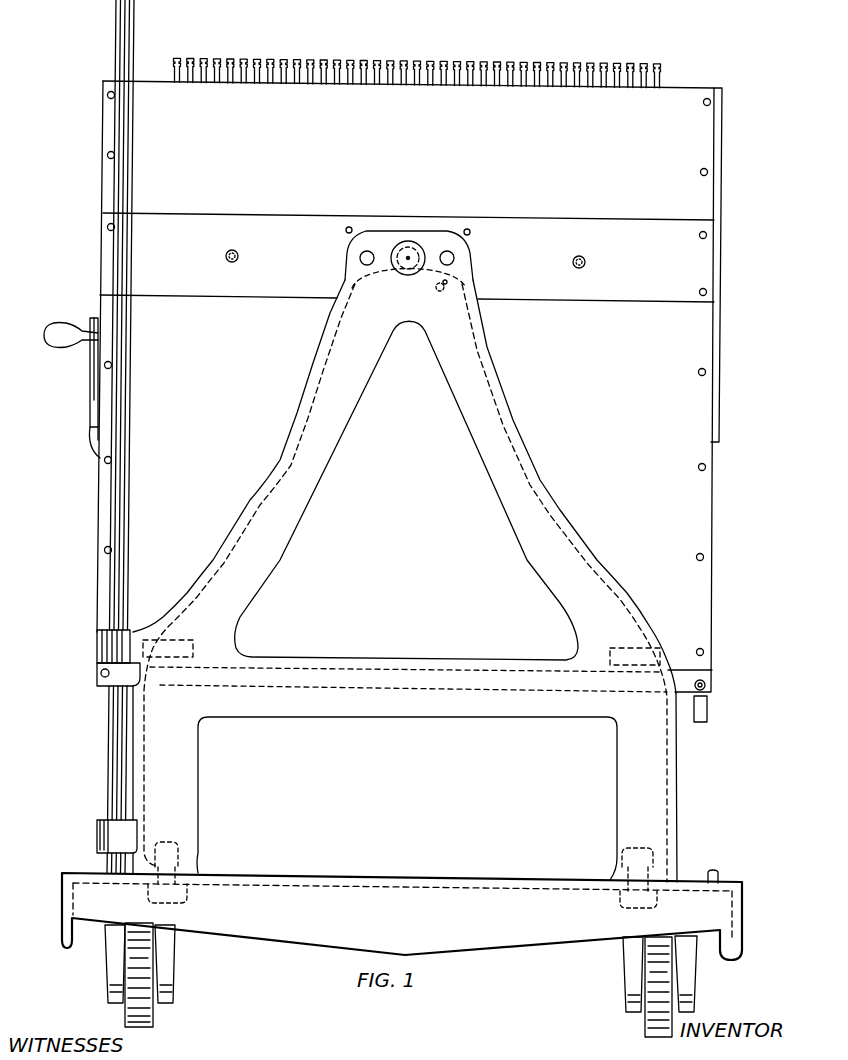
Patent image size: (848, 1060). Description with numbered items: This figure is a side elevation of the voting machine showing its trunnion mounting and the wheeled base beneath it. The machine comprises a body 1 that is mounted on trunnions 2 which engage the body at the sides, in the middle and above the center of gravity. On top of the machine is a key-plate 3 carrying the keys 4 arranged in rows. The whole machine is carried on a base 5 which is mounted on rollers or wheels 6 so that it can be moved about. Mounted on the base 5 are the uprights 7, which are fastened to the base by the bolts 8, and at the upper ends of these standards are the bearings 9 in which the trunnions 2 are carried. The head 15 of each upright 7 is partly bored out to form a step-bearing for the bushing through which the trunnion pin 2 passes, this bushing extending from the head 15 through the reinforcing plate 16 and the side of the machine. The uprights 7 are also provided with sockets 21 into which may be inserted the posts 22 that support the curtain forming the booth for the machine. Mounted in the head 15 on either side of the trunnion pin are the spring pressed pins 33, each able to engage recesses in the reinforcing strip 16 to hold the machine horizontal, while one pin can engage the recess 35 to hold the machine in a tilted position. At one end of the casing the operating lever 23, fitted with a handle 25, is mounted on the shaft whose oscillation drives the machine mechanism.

The body 1 is at (698, 155).
The trunnion 2 is at (416, 250).
The key-plate 3 is at (682, 87).
The keys 4 is at (659, 60).
The base 5 is at (390, 887).
The rollers or wheels 6 is at (645, 1027).
The uprights 7 is at (198, 780).
The bolts 8 is at (635, 860).
The bearings 9 is at (447, 281).
The head 15 is at (385, 240).
The reinforcing plate 16 is at (610, 228).
The sockets 21 is at (97, 840).
The posts 22 is at (115, 58).
The operating lever 23 is at (88, 383).
The handle 25 is at (53, 320).
The spring pressed pins 33 is at (453, 254).
The recess 35 is at (439, 285).